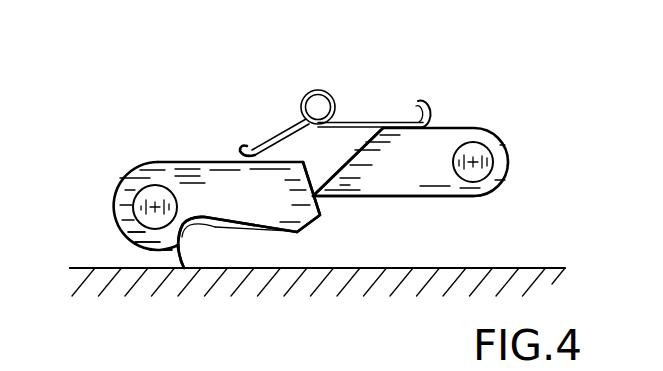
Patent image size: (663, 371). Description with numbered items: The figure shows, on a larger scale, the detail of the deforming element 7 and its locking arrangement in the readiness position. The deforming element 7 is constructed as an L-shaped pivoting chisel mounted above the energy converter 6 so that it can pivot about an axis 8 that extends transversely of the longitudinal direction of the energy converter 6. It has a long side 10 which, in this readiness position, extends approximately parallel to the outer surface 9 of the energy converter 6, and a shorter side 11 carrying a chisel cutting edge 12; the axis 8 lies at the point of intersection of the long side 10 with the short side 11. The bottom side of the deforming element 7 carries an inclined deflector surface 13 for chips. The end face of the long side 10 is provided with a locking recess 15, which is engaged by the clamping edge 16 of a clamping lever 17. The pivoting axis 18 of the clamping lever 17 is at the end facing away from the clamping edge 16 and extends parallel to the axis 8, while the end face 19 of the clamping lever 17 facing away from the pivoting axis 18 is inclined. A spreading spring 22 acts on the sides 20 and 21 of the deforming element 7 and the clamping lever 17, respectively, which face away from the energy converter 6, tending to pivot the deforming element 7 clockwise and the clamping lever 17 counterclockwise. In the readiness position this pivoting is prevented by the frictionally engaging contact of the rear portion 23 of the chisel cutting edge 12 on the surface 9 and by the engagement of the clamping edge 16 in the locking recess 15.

The energy converter 6 is at (88, 268).
The deforming element 7 is at (148, 158).
The axis 8 is at (155, 207).
The outer surface 9 is at (103, 266).
The long side 10 is at (183, 175).
The shorter side 11 is at (167, 247).
The chisel cutting edge 12 is at (184, 238).
The inclined deflector surface 13 is at (217, 227).
The locking recess 15 is at (340, 180).
The clamping edge 16 is at (306, 200).
The clamping lever 17 is at (424, 186).
The pivoting axis 18 is at (473, 162).
The end face 19 is at (351, 150).
The side 20 is at (214, 160).
The side 21 is at (446, 126).
The spreading spring 22 is at (307, 84).
The rear portion 23 is at (138, 255).